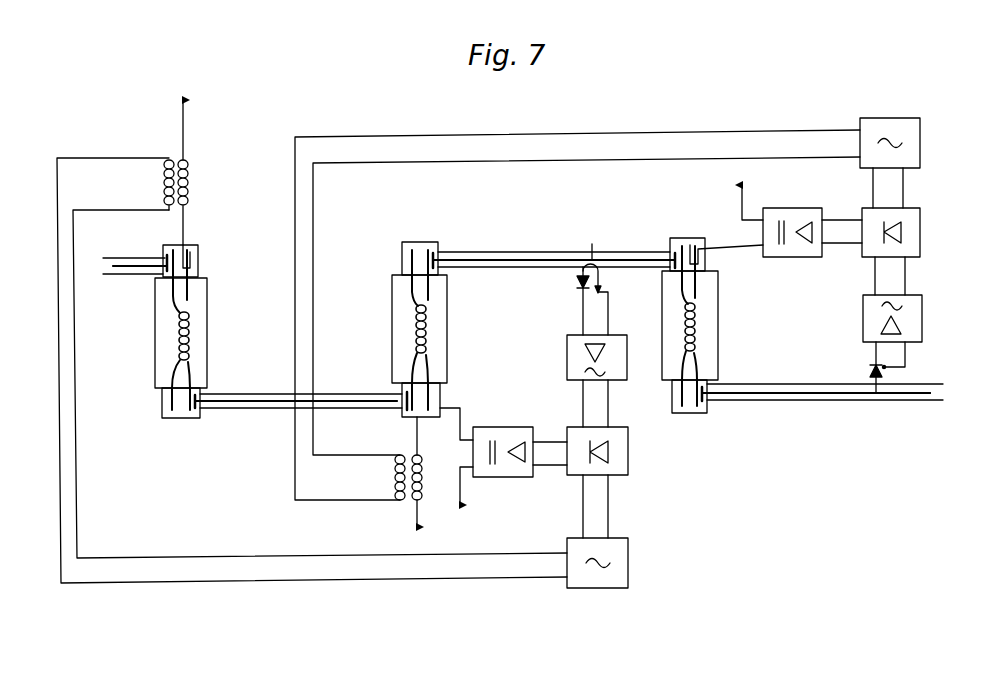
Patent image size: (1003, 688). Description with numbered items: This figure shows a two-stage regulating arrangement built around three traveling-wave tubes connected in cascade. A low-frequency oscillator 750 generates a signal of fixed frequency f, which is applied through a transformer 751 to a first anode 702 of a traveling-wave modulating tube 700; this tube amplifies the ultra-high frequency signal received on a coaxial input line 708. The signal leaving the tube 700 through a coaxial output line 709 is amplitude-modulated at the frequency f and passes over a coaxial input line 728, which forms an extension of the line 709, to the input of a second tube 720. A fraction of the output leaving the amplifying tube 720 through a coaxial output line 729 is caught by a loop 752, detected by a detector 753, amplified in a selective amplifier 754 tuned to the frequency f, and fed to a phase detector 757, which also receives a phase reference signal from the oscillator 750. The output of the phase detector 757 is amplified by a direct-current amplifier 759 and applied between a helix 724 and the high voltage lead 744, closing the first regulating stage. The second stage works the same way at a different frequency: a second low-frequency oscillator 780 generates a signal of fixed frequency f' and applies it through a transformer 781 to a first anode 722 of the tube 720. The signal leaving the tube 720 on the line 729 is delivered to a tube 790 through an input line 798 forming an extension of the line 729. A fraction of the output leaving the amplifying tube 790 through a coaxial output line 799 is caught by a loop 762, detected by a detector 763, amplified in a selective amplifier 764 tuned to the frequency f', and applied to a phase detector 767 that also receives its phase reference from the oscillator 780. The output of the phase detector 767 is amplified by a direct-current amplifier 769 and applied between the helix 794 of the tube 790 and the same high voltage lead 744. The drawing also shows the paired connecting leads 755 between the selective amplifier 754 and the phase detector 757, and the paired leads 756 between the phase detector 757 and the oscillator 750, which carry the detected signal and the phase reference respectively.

The traveling-wave modulating tube 700 is at (200, 346).
The first anode 702 is at (199, 250).
The coaxial input line 708 is at (140, 272).
The coaxial output line 709 is at (211, 414).
The amplifying traveling-wave tube 720 is at (392, 335).
The first anode 722 is at (418, 415).
The helix 724 is at (447, 372).
The coaxial input line 728 is at (397, 406).
The coaxial output line 729 is at (458, 263).
The high voltage lead 744 is at (605, 348).
The low-frequency oscillator 750 is at (628, 568).
The transformer 751 is at (177, 204).
The loop 752 is at (591, 247).
The detector 753 is at (574, 286).
The selective amplifier 754 is at (567, 370).
The connecting leads 755 is at (608, 418).
The connecting leads 756 is at (608, 528).
The phase detector 757 is at (628, 454).
The direct-current amplifier 759 is at (490, 477).
The loop 762 is at (878, 396).
The detector 763 is at (871, 375).
The selective amplifier 764 is at (918, 325).
The phase detector 767 is at (920, 243).
The direct-current amplifier 769 is at (792, 211).
The second low-frequency oscillator 780 is at (918, 159).
The transformer 781 is at (408, 498).
The amplifying tube 790 is at (707, 367).
The helix 794 is at (704, 331).
The input line 798 is at (666, 255).
The coaxial output line 799 is at (738, 401).